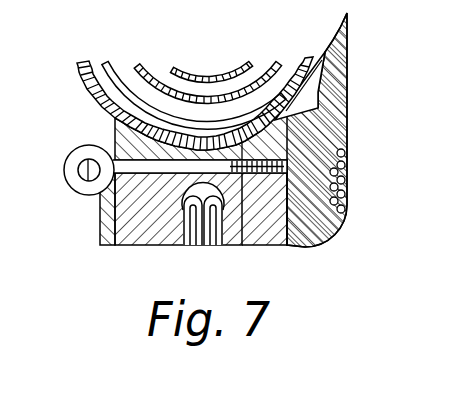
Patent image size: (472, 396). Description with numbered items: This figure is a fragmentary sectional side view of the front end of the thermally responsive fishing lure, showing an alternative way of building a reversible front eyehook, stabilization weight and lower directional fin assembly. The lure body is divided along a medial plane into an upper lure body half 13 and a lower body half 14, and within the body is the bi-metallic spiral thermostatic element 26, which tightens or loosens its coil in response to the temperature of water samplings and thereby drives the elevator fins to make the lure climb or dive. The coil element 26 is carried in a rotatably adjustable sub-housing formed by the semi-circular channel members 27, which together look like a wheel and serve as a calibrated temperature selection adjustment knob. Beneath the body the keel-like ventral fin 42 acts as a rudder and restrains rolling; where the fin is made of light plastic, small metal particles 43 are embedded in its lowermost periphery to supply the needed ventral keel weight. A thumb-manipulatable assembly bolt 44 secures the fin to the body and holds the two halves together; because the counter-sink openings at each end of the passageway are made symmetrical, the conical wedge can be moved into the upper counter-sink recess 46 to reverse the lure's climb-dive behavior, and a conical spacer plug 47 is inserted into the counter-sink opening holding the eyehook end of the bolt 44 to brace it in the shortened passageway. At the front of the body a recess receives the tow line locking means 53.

The upper lure body half 13 is at (142, 245).
The lower body half 14 is at (251, 245).
The thermostatic element 26 is at (108, 63).
The semi-circular channel members 27 is at (92, 143).
The ventral fin 42 is at (343, 52).
The small metal particles 43 is at (357, 169).
The assembly bolt 44 is at (64, 165).
The upper counter-sink recess 46 is at (102, 207).
The conical spacer plug 47 is at (118, 130).
The tow line locking means 53 is at (197, 245).